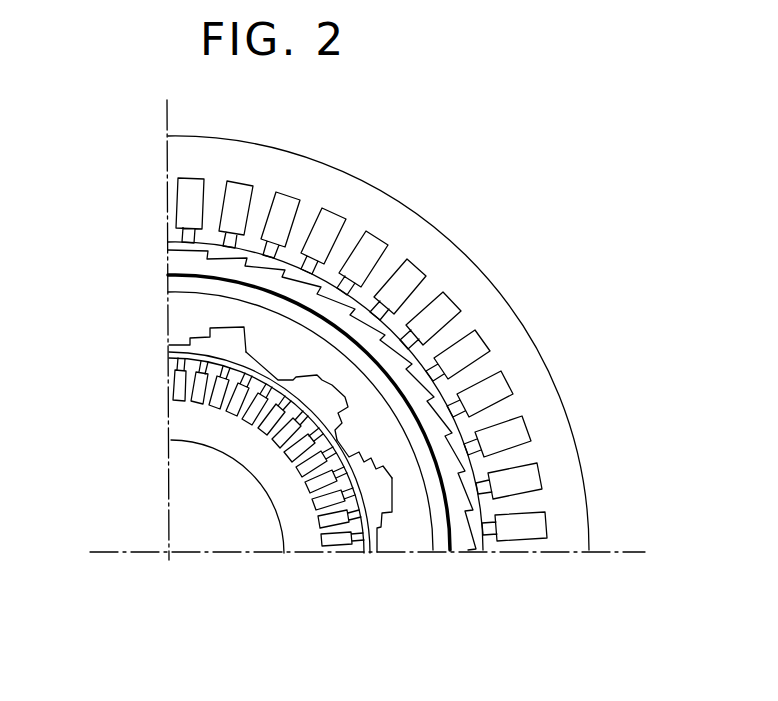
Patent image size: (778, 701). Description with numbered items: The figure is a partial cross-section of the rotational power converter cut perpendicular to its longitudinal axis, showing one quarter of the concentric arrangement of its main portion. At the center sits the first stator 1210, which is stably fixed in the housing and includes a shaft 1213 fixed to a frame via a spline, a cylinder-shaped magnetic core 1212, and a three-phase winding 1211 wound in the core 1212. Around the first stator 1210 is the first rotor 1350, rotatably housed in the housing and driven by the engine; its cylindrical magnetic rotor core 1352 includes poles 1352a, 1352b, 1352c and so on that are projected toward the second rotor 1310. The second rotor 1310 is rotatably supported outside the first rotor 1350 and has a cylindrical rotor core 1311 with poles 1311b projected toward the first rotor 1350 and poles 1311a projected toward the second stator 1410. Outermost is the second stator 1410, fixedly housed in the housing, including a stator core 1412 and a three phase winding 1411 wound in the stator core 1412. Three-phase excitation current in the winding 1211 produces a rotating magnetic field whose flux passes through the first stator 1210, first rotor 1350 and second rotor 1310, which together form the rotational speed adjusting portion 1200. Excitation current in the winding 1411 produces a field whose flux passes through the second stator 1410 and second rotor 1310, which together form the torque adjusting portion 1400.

The torque adjusting portion 1400 is at (153, 133).
The second stator 1410 is at (181, 164).
The three phase winding 1411 is at (525, 528).
The stator core 1412 is at (572, 533).
The second rotor 1310 is at (201, 267).
The rotor core 1311 is at (455, 536).
The poles 1311a is at (467, 537).
The poles 1311b is at (408, 463).
The rotational speed adjusting portion 1200 is at (153, 290).
The first stator 1210 is at (181, 422).
The three-phase winding 1211 is at (340, 537).
The magnetic core 1212 is at (306, 532).
The shaft 1213 is at (218, 535).
The first rotor 1350 is at (186, 339).
The magnetic rotor core 1352 is at (377, 517).
The pole 1352a is at (246, 333).
The pole 1352b is at (323, 394).
The pole 1352c is at (386, 494).